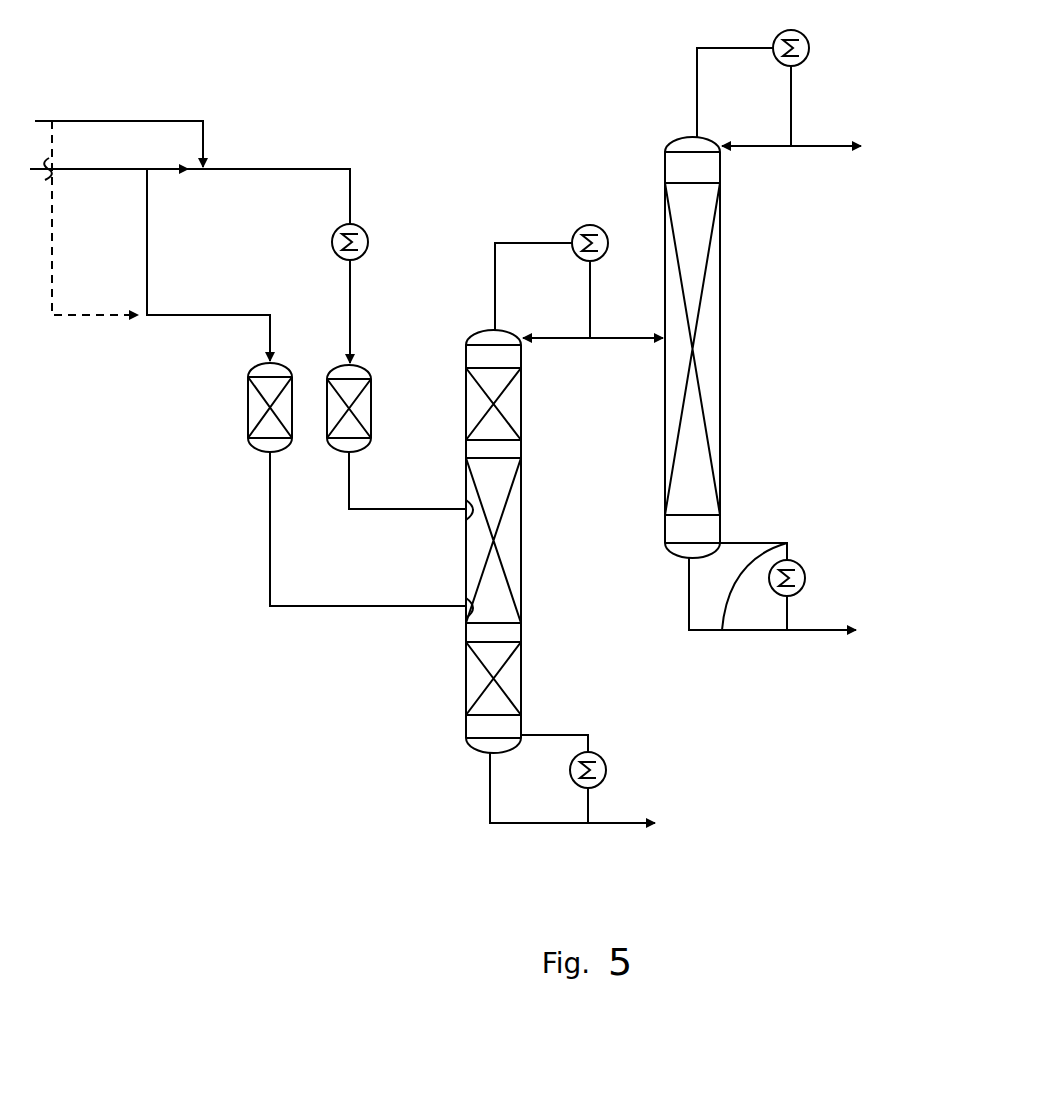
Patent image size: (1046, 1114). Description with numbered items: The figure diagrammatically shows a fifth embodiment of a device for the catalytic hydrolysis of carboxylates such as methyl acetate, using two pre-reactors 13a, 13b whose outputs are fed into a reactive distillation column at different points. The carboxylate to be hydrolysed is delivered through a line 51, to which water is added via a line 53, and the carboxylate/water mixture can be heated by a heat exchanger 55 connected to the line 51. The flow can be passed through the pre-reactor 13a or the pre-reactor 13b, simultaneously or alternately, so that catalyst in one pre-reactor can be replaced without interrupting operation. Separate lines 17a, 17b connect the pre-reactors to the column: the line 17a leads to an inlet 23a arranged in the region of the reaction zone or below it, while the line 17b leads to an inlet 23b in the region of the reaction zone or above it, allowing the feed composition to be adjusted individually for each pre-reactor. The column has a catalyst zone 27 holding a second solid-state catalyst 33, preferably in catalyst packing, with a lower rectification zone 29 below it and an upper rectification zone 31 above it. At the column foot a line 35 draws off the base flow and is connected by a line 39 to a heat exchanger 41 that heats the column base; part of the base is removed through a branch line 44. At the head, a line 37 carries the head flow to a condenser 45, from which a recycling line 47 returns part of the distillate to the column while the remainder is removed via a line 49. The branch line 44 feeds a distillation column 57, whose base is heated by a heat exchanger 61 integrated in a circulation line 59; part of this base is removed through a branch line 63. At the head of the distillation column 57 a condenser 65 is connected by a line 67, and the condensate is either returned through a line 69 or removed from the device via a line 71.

The pre-reactor 13a is at (248, 406).
The pre-reactor 13b is at (371, 408).
The line 17a is at (330, 610).
The line 17b is at (380, 513).
The inlet 23a is at (466, 627).
The inlet 23b is at (466, 530).
The catalyst zone 27 is at (532, 541).
The lower rectification zone 29 is at (521, 685).
The upper rectification zone 31 is at (521, 405).
The second solid-state catalyst 33 is at (508, 573).
The line 35 is at (490, 803).
The line 37 is at (495, 306).
The line 39 is at (595, 805).
The heat exchanger 41 is at (607, 768).
The branch line 44 is at (610, 825).
The condenser 45 is at (608, 243).
The recycling line 47 is at (592, 295).
The line 49 is at (617, 340).
The line 51 is at (101, 176).
The line 53 is at (95, 118).
The heat exchanger 55 is at (332, 242).
The distillation column 57 is at (740, 317).
The circulation line 59 is at (765, 538).
The heat exchanger 61 is at (805, 580).
The branch line 63 is at (812, 632).
The condenser 65 is at (809, 48).
The line 67 is at (697, 87).
The line 69 is at (793, 105).
The line 71 is at (820, 146).